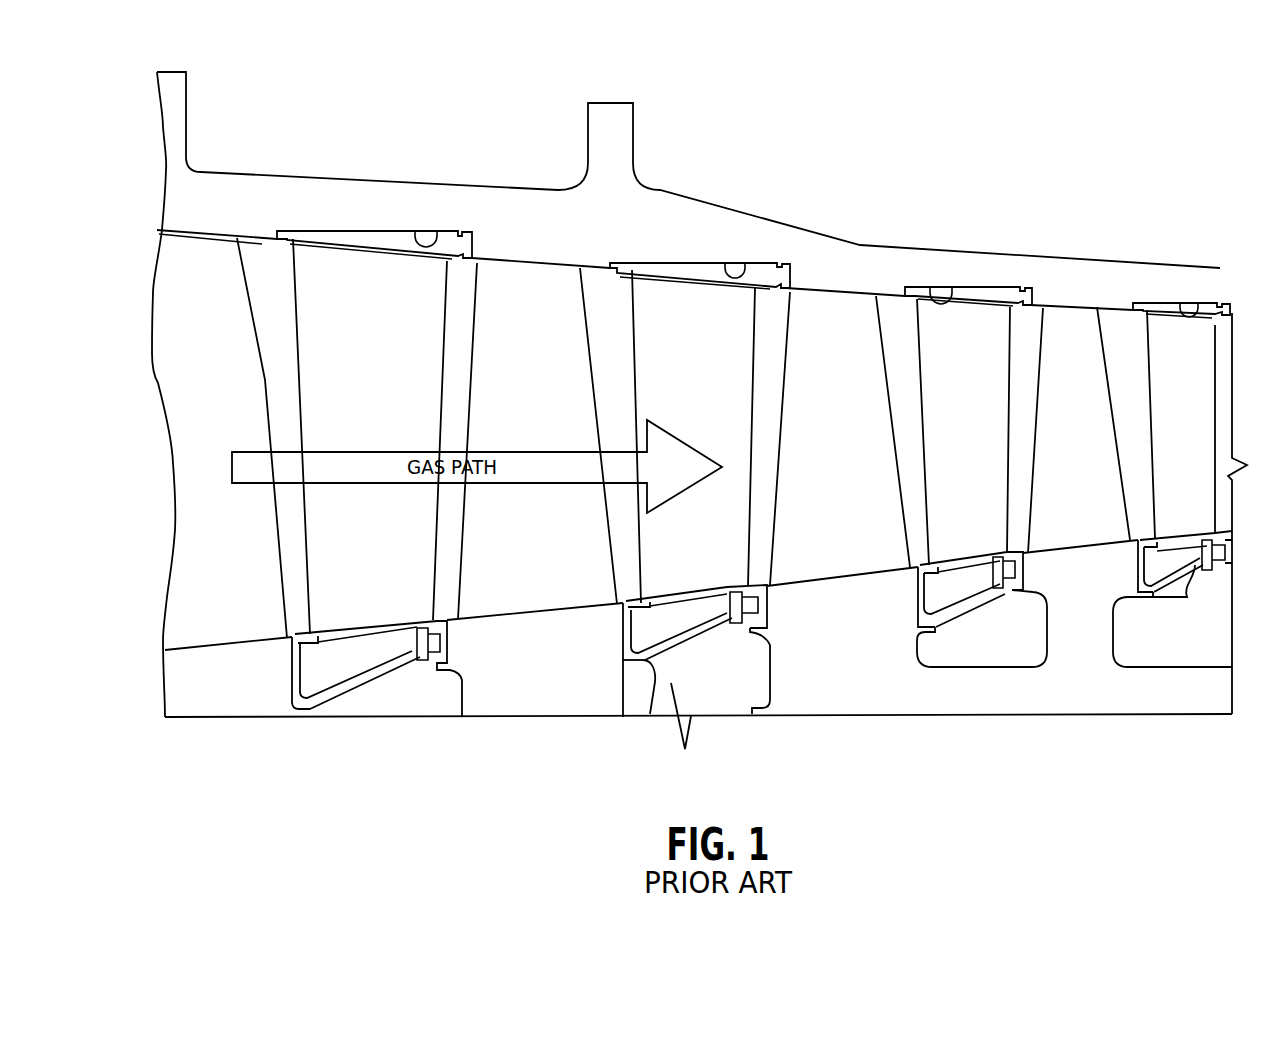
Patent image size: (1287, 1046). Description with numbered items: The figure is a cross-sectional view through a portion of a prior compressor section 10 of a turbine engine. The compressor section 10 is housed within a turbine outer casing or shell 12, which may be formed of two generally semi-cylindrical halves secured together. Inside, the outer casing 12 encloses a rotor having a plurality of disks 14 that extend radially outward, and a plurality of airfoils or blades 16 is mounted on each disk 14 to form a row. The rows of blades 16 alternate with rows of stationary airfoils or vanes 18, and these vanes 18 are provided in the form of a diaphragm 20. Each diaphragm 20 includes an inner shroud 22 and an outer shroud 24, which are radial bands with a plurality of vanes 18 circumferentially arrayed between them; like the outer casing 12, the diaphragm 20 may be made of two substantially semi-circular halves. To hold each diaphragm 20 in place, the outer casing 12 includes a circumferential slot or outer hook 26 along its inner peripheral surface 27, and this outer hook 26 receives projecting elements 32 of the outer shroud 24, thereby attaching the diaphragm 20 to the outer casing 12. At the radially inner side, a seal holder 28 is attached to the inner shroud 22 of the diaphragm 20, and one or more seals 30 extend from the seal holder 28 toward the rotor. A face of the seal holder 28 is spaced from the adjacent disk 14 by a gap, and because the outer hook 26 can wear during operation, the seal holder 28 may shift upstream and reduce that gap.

The compressor section 10 is at (1093, 196).
The outer casing 12 is at (858, 247).
The disk 14 is at (1100, 620).
The blade 16 is at (1086, 422).
The vane 18 is at (1198, 423).
The diaphragm 20 is at (292, 302).
The inner shroud 22 is at (370, 637).
The outer shroud 24 is at (343, 245).
The outer hook 26 is at (415, 231).
The inner peripheral surface 27 is at (260, 244).
The seal holder 28 is at (350, 680).
The seal 30 is at (310, 706).
The projecting element 32 is at (447, 243).